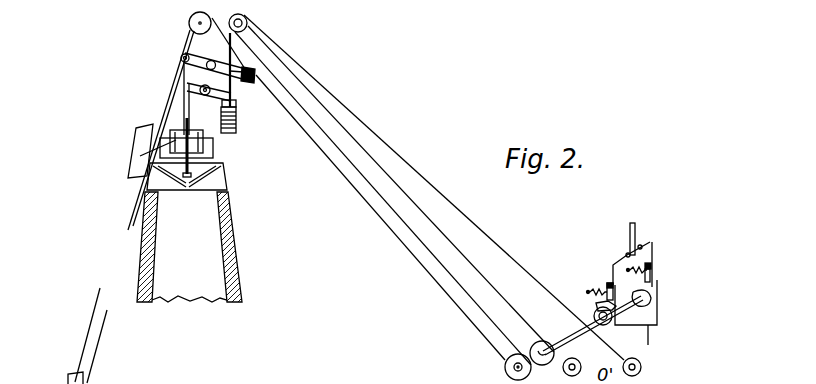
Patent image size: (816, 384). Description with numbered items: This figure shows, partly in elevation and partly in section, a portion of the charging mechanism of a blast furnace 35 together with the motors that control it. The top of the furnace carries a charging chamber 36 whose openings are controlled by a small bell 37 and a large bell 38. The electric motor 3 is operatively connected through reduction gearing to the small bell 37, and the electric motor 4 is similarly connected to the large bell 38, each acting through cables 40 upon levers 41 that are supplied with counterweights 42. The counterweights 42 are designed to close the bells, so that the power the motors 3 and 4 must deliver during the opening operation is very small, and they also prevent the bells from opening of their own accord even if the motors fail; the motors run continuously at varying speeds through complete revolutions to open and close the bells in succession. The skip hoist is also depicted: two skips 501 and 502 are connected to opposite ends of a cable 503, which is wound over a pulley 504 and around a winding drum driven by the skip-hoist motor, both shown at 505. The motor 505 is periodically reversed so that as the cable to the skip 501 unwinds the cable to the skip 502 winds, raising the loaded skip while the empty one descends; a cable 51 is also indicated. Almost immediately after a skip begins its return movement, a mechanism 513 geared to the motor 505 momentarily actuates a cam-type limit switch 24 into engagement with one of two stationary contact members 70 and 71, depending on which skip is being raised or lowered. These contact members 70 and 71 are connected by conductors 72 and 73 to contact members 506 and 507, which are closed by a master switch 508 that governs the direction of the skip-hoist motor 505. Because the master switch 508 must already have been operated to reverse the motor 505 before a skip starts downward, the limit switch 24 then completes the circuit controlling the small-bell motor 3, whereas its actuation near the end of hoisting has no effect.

The pulley 504 is at (189, 23).
The cable 503 is at (153, 112).
The skip 501 is at (95, 383).
The skip 502 is at (138, 130).
The small bell 37 is at (150, 155).
The lever 41 is at (207, 60).
The counterweight 42 is at (250, 83).
The cable 40 is at (396, 152).
The cable 51 is at (380, 229).
The charging chamber 36 is at (221, 163).
The large bell 38 is at (176, 184).
The blast furnace 35 is at (227, 183).
The skip hoist motor and winding drum 505 is at (506, 372).
The mechanism 513 is at (545, 343).
The electric motor 4 is at (580, 365).
The electric motor 3 is at (641, 367).
The limit switch 24 is at (689, 295).
The master switch 508 is at (637, 233).
The contact member 506 is at (642, 246).
The conductor 72 is at (654, 243).
The stationary contact member 70 is at (653, 266).
The contact member 507 is at (626, 254).
The conductor 73 is at (611, 267).
The stationary contact member 71 is at (604, 280).